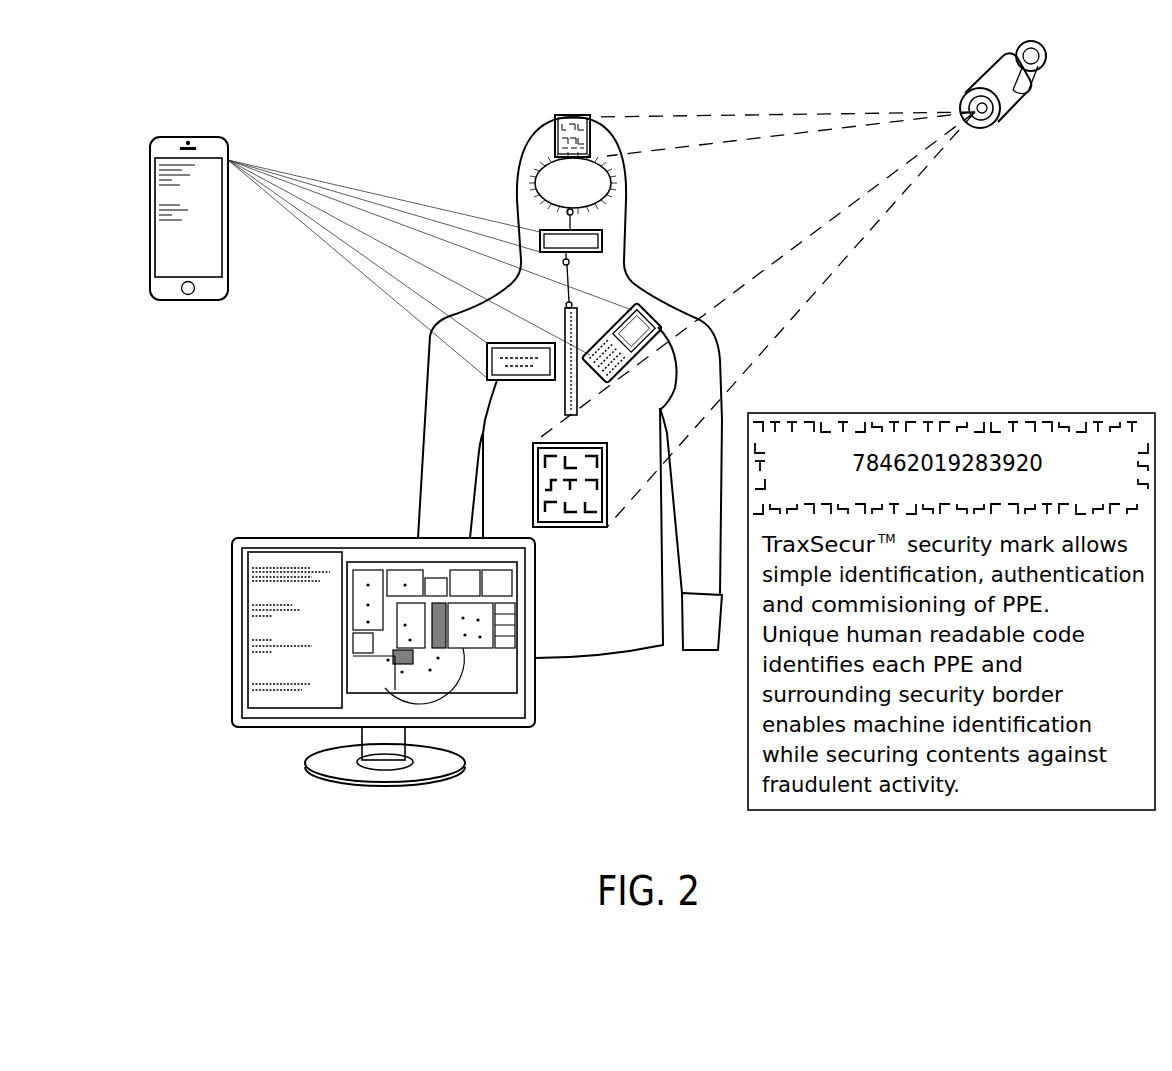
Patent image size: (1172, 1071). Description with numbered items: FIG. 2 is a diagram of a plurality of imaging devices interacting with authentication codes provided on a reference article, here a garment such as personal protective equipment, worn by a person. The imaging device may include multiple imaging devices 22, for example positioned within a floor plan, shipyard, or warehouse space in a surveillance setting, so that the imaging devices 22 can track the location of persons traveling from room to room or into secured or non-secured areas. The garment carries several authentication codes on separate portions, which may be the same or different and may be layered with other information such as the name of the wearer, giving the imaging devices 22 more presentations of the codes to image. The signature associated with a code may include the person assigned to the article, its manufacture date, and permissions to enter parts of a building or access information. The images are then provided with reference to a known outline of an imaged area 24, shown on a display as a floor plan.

The imaging device 22 is at (190, 137).
The imaged area 24 is at (232, 633).